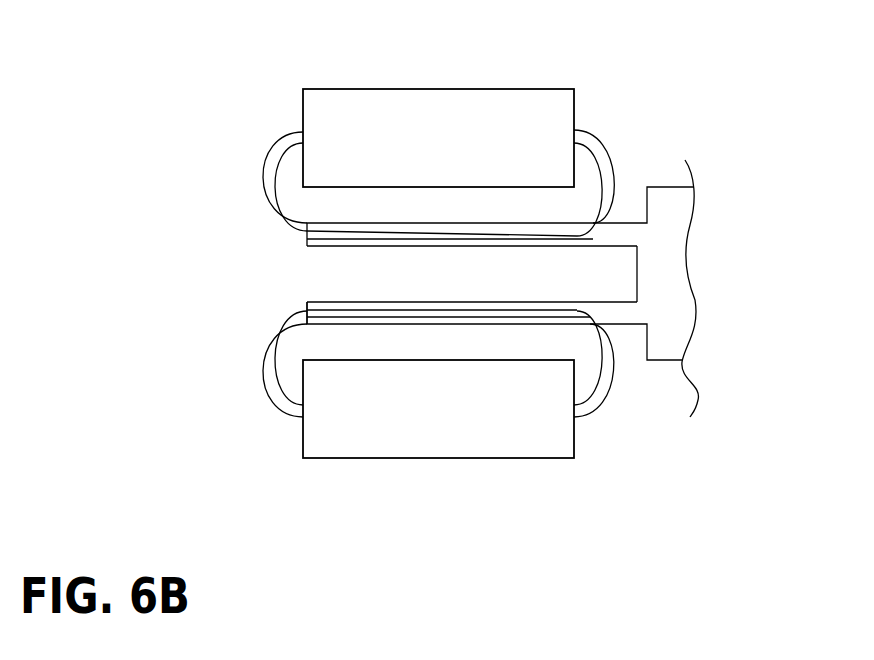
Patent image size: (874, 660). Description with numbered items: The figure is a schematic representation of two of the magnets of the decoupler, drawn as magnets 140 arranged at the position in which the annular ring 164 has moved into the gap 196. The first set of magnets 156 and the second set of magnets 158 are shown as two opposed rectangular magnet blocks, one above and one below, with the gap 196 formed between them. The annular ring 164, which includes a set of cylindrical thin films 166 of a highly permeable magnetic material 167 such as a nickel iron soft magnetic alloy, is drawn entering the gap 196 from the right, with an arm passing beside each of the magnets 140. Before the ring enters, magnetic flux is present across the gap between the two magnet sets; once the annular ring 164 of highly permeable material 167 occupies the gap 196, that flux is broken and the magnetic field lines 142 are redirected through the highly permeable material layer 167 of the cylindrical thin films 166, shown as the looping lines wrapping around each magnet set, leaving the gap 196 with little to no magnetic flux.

The magnet 140 is at (403, 133).
The magnetic field lines 142 is at (266, 357).
The first set of magnets 156 is at (524, 436).
The second set of magnets 158 is at (497, 140).
The annular ring 164 is at (634, 331).
The set of cylindrical thin films 166 is at (609, 230).
The highly permeable magnetic material 167 is at (320, 303).
The gap 196 is at (446, 285).